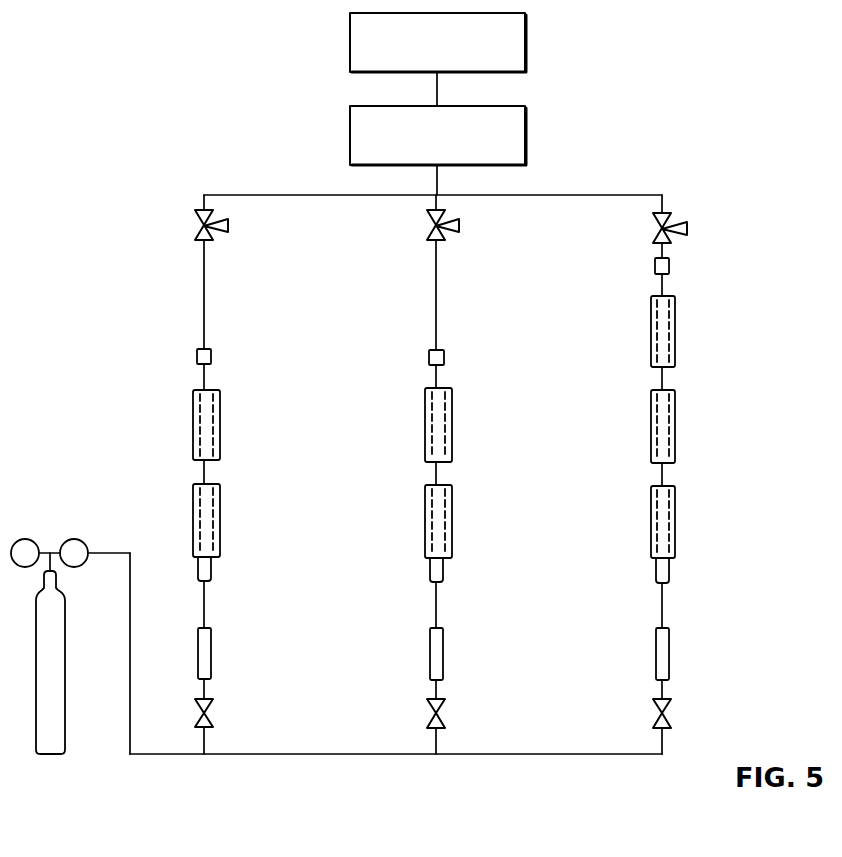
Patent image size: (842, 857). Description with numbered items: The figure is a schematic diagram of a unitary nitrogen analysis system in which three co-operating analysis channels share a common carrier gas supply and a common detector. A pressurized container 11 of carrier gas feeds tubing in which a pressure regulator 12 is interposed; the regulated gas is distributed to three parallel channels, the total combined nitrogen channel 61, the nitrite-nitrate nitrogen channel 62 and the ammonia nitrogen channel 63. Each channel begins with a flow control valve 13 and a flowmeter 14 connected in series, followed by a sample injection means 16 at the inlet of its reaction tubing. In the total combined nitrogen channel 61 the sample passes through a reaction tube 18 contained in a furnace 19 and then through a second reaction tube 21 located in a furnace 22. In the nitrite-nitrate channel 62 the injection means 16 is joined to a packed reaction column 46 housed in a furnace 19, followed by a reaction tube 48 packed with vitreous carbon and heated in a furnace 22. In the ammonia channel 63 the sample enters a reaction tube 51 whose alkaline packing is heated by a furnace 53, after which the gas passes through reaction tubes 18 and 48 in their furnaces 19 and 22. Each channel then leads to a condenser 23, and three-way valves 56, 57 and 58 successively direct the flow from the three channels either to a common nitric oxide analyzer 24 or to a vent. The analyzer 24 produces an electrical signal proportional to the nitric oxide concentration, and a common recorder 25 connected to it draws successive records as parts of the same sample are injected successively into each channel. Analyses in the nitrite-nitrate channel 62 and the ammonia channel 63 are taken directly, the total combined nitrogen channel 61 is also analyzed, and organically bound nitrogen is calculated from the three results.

The pressurized container 11 is at (65, 673).
The pressure regulator 12 is at (80, 540).
The flow control valve 13 is at (212, 712).
The flowmeter 14 is at (211, 660).
The sample injection means 16 is at (212, 577).
The reaction tube 18 is at (212, 540).
The furnace 19 is at (220, 507).
The second reaction tube 21 is at (199, 430).
The furnace 22 is at (193, 396).
The condenser 23 is at (211, 357).
The nitric oxide analyzer 24 is at (526, 146).
The recorder 25 is at (526, 52).
The packed reaction column 46 is at (446, 536).
The reaction tube 48 is at (431, 430).
The reaction tube 51 is at (670, 537).
The furnace 53 is at (675, 511).
The three-way valve 56 is at (222, 229).
The three-way valve 57 is at (452, 230).
The three-way valve 58 is at (680, 232).
The total combined nitrogen channel 61 is at (204, 754).
The nitrite-nitrate nitrogen channel 62 is at (437, 754).
The ammonia nitrogen channel 63 is at (663, 754).